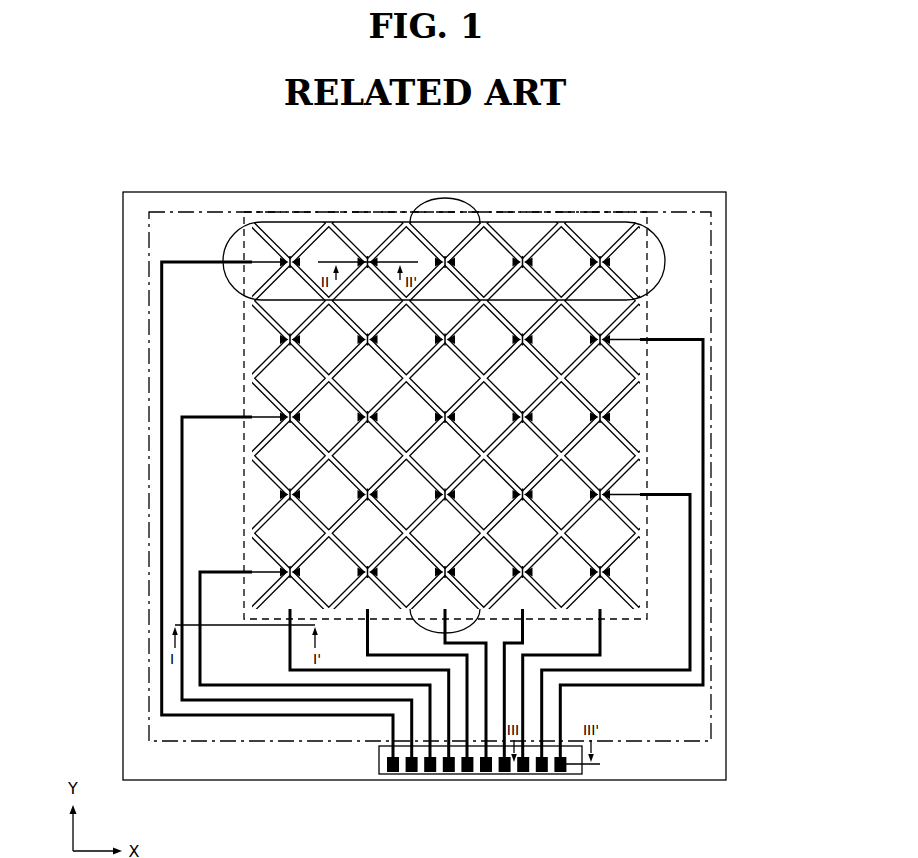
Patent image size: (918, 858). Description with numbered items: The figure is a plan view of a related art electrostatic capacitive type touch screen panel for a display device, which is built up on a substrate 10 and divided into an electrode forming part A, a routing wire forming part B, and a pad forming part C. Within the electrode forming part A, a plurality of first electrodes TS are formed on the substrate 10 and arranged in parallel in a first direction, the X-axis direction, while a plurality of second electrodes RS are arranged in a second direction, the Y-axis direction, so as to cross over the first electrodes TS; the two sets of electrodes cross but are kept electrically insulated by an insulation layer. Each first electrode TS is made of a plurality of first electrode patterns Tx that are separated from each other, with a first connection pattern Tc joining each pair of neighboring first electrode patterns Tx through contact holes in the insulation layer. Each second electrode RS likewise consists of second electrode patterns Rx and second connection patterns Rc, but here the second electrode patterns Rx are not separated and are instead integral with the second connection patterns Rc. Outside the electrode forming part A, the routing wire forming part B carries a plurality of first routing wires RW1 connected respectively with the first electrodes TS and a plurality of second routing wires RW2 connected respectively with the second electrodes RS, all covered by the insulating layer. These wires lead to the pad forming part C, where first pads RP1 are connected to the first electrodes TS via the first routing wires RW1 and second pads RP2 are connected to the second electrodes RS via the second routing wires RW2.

The substrate 10 is at (727, 764).
The routing wire forming part B is at (197, 204).
The electrode forming part A is at (343, 204).
The first electrode TS is at (497, 397).
The second electrode pattern Rx is at (612, 302).
The first electrode pattern Tx is at (575, 480).
The second connection pattern Rc is at (606, 352).
The first connection pattern Tc is at (607, 250).
The second electrode RS is at (447, 198).
The first routing wire RW1 is at (161, 323).
The second routing wire RW2 is at (605, 632).
The pad forming part C is at (464, 781).
The first pad RP1 is at (436, 778).
The second pad RP2 is at (443, 778).